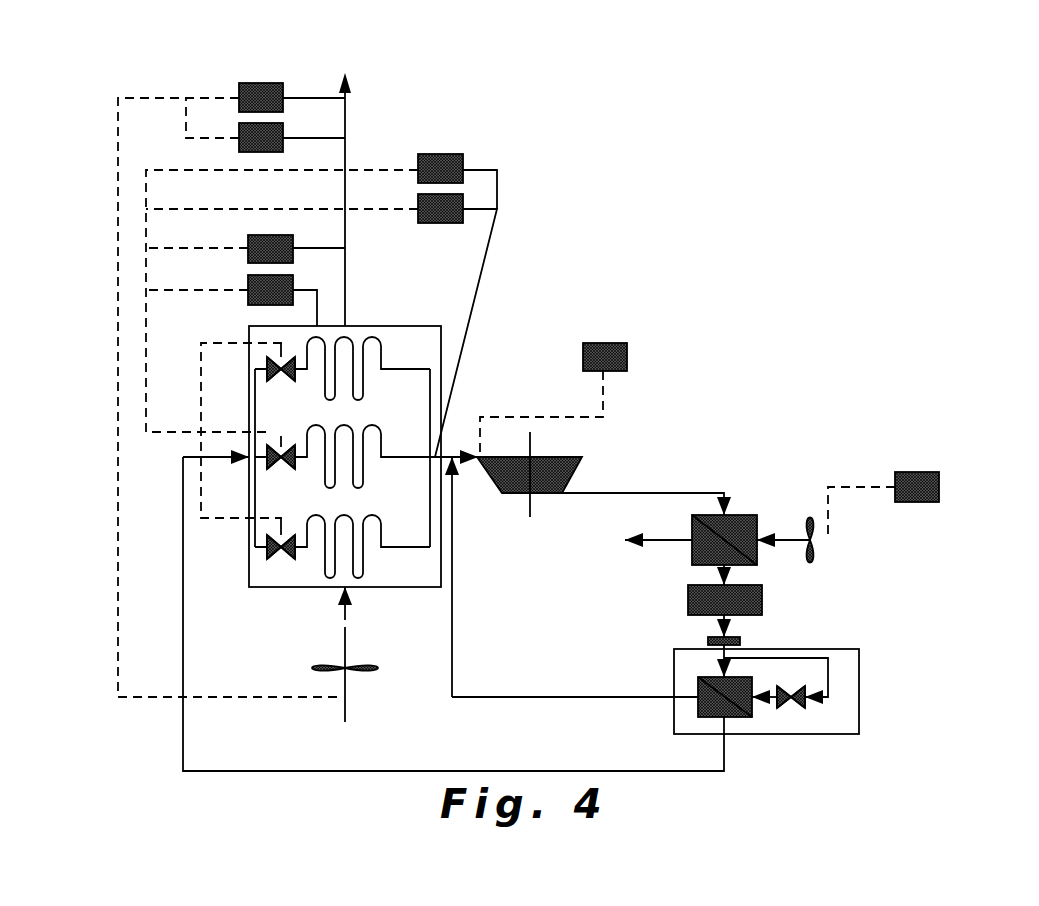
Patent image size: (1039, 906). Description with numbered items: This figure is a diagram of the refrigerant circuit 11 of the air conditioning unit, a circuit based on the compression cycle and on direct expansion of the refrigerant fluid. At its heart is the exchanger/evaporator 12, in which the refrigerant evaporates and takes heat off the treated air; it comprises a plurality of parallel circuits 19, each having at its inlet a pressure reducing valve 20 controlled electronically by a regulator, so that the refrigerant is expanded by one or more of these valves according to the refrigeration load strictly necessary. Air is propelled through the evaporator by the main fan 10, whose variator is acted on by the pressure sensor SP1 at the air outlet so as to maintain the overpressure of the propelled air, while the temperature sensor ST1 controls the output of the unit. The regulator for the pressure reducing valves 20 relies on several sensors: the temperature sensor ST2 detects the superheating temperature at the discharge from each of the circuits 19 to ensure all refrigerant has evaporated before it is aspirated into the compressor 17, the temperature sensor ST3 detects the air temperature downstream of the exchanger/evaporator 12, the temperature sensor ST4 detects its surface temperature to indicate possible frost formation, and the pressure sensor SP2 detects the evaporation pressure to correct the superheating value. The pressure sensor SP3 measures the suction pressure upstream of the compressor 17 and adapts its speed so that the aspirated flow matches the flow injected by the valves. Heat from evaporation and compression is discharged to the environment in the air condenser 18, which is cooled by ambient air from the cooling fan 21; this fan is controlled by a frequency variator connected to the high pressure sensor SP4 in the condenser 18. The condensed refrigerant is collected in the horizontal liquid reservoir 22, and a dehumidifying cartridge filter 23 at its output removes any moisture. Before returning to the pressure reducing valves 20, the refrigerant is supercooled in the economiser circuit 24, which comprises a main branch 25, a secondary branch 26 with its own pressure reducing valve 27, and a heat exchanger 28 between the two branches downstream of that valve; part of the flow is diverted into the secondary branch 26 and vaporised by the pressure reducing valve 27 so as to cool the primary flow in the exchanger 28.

The main fan 10 is at (347, 682).
The refrigerant circuit 11 is at (838, 432).
The exchanger/evaporator 12 is at (442, 362).
The compressor 17 is at (572, 475).
The air condenser 18 is at (740, 515).
The parallel circuits 19 is at (378, 350).
The pressure reducing valve 20 is at (272, 362).
The cooling fan 21 is at (818, 556).
The horizontal liquid reservoir 22 is at (762, 600).
The dehumidifying cartridge filter 23 is at (740, 640).
The economiser circuit 24 is at (862, 692).
The main branch 25 is at (722, 660).
The secondary branch 26 is at (830, 678).
The pressure reducing valve 27 is at (805, 703).
The heat exchanger 28 is at (697, 710).
The pressure sensor SP1 is at (239, 89).
The pressure sensor SP2 is at (463, 201).
The pressure sensor SP3 is at (627, 355).
The pressure sensor SP4 is at (939, 485).
The temperature sensor ST1 is at (239, 145).
The temperature sensor ST2 is at (463, 162).
The temperature sensor ST3 is at (247, 240).
The temperature sensor ST4 is at (247, 276).